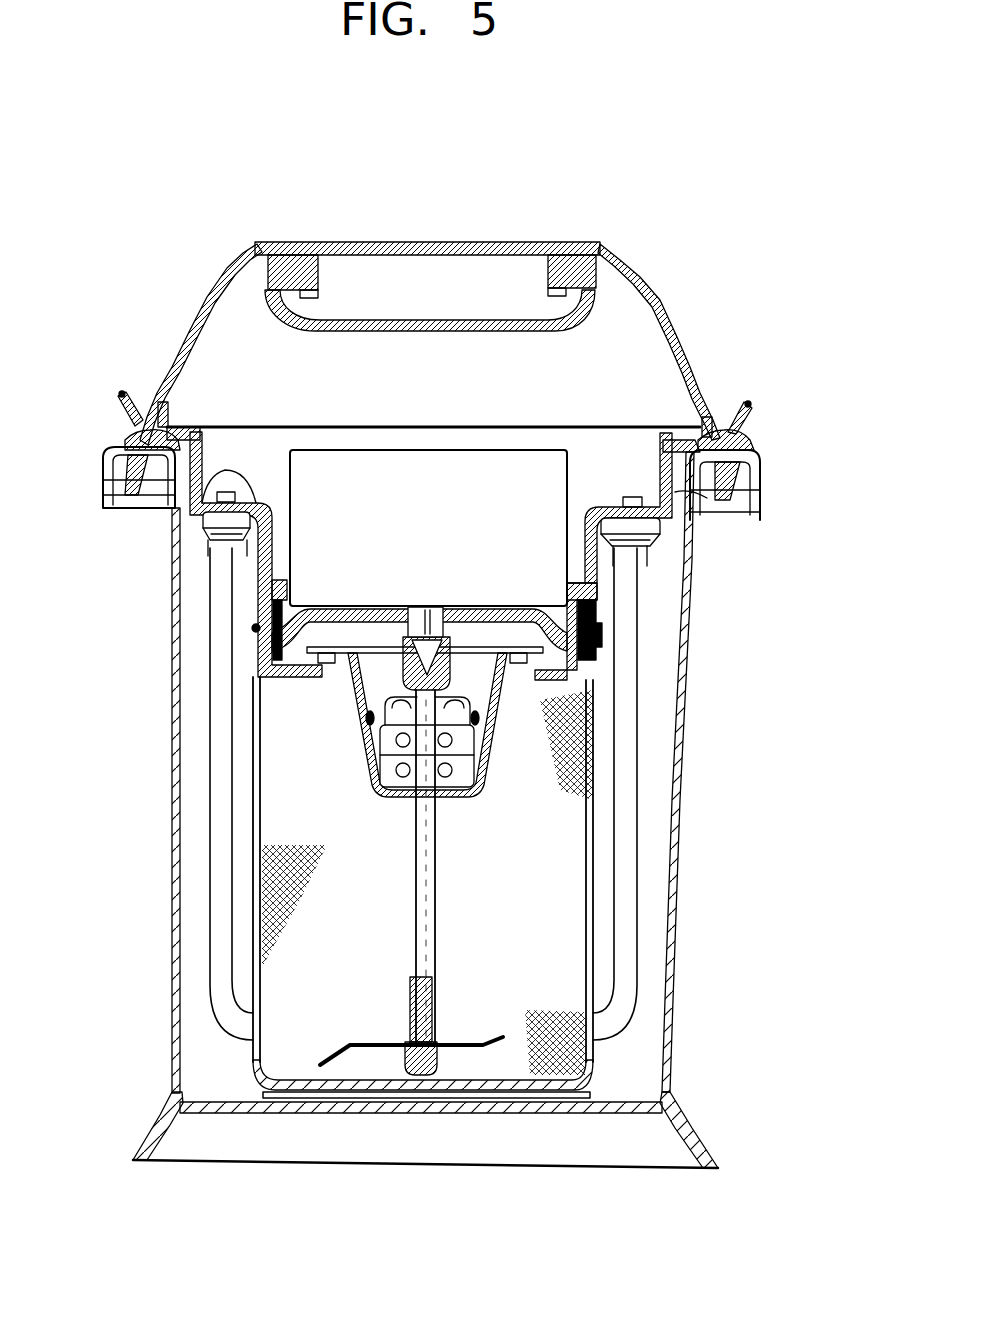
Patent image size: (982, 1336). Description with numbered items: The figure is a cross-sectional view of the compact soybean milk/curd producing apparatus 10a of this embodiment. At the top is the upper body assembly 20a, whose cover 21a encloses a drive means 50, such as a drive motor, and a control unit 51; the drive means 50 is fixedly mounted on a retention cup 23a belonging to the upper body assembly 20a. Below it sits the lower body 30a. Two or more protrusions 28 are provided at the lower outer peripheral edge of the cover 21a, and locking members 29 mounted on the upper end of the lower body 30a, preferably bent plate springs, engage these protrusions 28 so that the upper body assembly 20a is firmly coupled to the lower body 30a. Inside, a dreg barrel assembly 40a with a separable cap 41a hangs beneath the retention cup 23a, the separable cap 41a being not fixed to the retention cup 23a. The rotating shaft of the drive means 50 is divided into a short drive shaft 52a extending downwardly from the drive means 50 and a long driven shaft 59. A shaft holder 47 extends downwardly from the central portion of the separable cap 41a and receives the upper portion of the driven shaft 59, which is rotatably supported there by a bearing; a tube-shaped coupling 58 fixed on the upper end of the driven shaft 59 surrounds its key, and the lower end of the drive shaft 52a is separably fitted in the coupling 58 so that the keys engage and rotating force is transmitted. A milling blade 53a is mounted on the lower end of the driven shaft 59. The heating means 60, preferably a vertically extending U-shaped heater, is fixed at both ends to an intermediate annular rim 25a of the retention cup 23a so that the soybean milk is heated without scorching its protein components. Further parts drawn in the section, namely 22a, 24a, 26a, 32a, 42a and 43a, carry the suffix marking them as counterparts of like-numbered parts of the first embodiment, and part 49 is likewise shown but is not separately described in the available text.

The soybean milk/curd producing apparatus 10a is at (473, 237).
The upper body assembly 20a is at (693, 300).
The cover 21a is at (700, 395).
The handle 22a is at (563, 248).
The retention cup 23a is at (650, 547).
The gasket 24a is at (713, 427).
The intermediate annular rim 25a is at (190, 470).
The inner lid 26a is at (597, 623).
The protrusions 28 is at (750, 442).
The locking members 29 is at (745, 405).
The lower body 30a is at (163, 627).
The base skirt 32a is at (150, 1108).
The dreg barrel assembly 40a is at (247, 748).
The separable cap 41a is at (253, 680).
The conduit 42a is at (257, 855).
The container bottom 43a is at (258, 1073).
The shaft holder 47 is at (483, 745).
The base plate 49 is at (583, 1102).
The drive means 50 is at (310, 540).
The control unit 51 is at (327, 438).
The short drive shaft 52a is at (560, 655).
The milling blade 53a is at (503, 1035).
The tube-shaped coupling 58 is at (455, 683).
The long driven shaft 59 is at (435, 815).
The heating means 60 is at (627, 900).